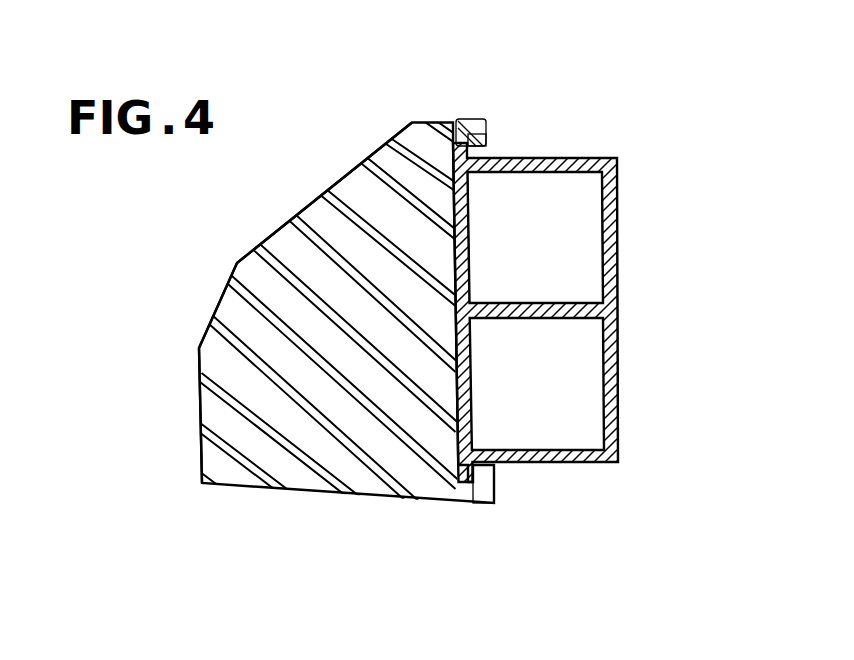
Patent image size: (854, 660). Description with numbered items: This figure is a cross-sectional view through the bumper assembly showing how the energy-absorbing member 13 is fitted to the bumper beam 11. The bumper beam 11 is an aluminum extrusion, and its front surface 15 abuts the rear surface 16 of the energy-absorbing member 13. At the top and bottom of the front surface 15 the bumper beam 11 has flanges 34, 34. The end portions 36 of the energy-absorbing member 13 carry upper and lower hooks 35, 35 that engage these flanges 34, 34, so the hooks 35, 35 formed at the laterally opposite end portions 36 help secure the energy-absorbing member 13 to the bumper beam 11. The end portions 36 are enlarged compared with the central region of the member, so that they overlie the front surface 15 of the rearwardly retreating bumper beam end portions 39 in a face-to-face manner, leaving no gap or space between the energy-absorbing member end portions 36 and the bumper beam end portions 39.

The bumper beam 11 is at (566, 157).
The energy-absorbing member 13 is at (375, 505).
The front surface 15 is at (453, 203).
The rear surface 16 is at (467, 237).
The flanges 34 is at (461, 136).
The upper and lower hooks 35 is at (484, 137).
The end portions 36 is at (214, 357).
The end portions 39 is at (619, 267).